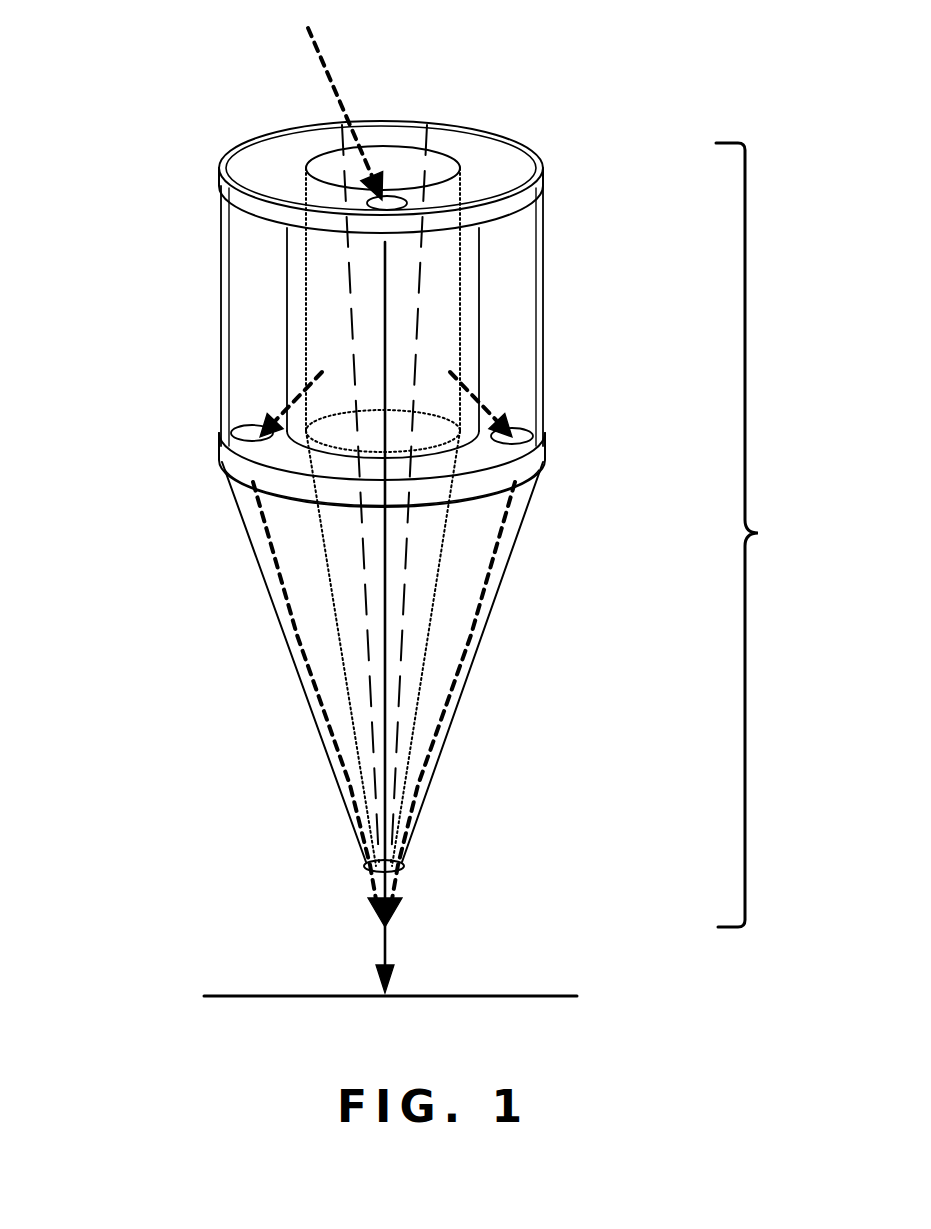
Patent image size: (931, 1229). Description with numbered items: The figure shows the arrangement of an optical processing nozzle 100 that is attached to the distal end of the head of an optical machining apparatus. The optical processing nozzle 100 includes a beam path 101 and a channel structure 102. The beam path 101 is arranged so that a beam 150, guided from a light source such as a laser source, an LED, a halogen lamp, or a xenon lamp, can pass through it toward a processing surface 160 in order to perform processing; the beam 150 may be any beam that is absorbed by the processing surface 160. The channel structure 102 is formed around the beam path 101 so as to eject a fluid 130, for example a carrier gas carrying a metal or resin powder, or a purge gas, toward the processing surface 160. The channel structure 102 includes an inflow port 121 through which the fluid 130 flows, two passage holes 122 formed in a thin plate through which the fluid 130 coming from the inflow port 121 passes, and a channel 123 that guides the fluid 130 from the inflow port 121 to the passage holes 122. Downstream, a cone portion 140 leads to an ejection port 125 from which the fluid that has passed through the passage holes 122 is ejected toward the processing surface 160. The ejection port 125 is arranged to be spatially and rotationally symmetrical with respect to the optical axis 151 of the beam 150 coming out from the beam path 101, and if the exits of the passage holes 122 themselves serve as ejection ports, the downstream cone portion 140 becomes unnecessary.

The optical processing nozzle 100 is at (158, 158).
The beam path 101 is at (430, 162).
The channel structure 102 is at (771, 535).
The inflow port 121 is at (386, 192).
The passage holes 122 is at (248, 430).
The channel 123 is at (512, 287).
The ejection port 125 is at (402, 866).
The fluid 130 is at (330, 64).
The downstream cone portion 140 is at (440, 752).
The beam 150 is at (405, 650).
The optical axis 151 is at (383, 320).
The processing surface 160 is at (238, 993).